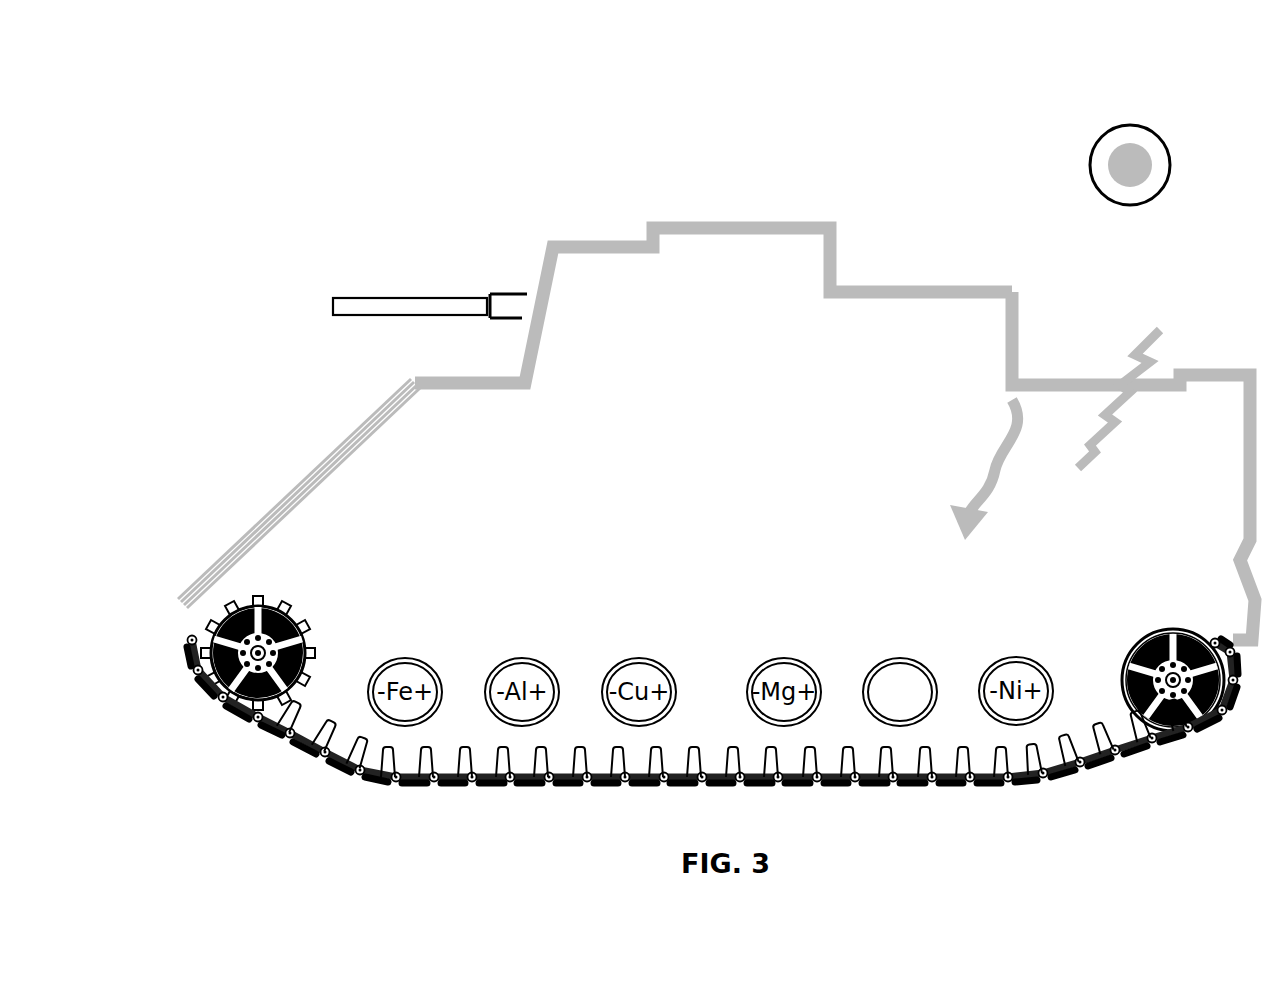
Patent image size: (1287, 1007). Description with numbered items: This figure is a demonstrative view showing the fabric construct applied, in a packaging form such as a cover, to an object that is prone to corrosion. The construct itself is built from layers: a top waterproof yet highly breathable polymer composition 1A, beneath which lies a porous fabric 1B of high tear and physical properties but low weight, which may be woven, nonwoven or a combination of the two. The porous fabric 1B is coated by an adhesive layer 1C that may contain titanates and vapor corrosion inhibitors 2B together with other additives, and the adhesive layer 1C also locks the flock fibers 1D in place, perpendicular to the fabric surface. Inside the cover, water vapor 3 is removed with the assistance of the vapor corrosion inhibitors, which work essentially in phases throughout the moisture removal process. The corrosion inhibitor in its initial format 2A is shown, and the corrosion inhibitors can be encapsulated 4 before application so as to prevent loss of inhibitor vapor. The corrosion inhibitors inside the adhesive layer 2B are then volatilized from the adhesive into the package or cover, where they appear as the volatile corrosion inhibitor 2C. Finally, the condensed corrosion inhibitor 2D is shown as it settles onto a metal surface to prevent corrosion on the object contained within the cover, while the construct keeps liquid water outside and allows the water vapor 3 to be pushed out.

The polymer composition 1A is at (270, 473).
The porous fabric 1B is at (248, 508).
The adhesive layer 1C is at (221, 548).
The flock fibers 1D is at (195, 583).
The corrosion inhibitor in initial format 2A is at (1153, 168).
The corrosion inhibitors inside adhesive layer 2B is at (948, 273).
The volatile corrosion inhibitor 2C is at (948, 511).
The condensed corrosion inhibitor 2D is at (928, 621).
The water vapor 3 is at (1120, 349).
The encapsulation 4 is at (1074, 168).